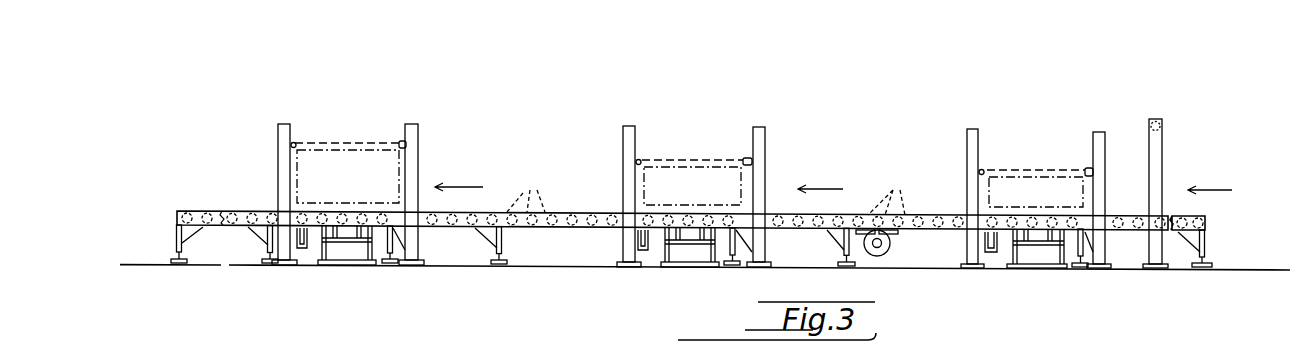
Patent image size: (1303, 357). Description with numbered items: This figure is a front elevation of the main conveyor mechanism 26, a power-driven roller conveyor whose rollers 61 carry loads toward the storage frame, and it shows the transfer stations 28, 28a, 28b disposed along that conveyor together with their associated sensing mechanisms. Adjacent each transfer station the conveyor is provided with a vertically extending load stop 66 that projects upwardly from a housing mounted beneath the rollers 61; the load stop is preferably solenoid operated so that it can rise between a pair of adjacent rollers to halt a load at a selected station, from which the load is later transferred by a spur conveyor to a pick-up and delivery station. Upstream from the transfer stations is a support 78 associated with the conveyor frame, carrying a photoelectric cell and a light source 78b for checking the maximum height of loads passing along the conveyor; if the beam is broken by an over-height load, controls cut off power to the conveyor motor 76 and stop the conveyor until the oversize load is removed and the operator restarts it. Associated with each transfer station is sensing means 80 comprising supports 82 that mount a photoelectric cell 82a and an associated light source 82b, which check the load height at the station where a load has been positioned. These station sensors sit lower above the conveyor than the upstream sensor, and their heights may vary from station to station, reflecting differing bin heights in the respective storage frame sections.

The main conveyor mechanism 26 is at (488, 200).
The transfer station 28 is at (1043, 232).
The transfer station 28a is at (697, 252).
The transfer station 28b is at (357, 250).
The rollers 61 is at (708, 191).
The load stop 66 is at (302, 250).
The conveyor motor 76 is at (893, 245).
The support 78 is at (1162, 158).
The light source 78b is at (1166, 124).
The sensing means 80 is at (411, 104).
The supports 82 is at (278, 153).
The photoelectric cell 82a is at (294, 143).
The light source 82b is at (402, 141).